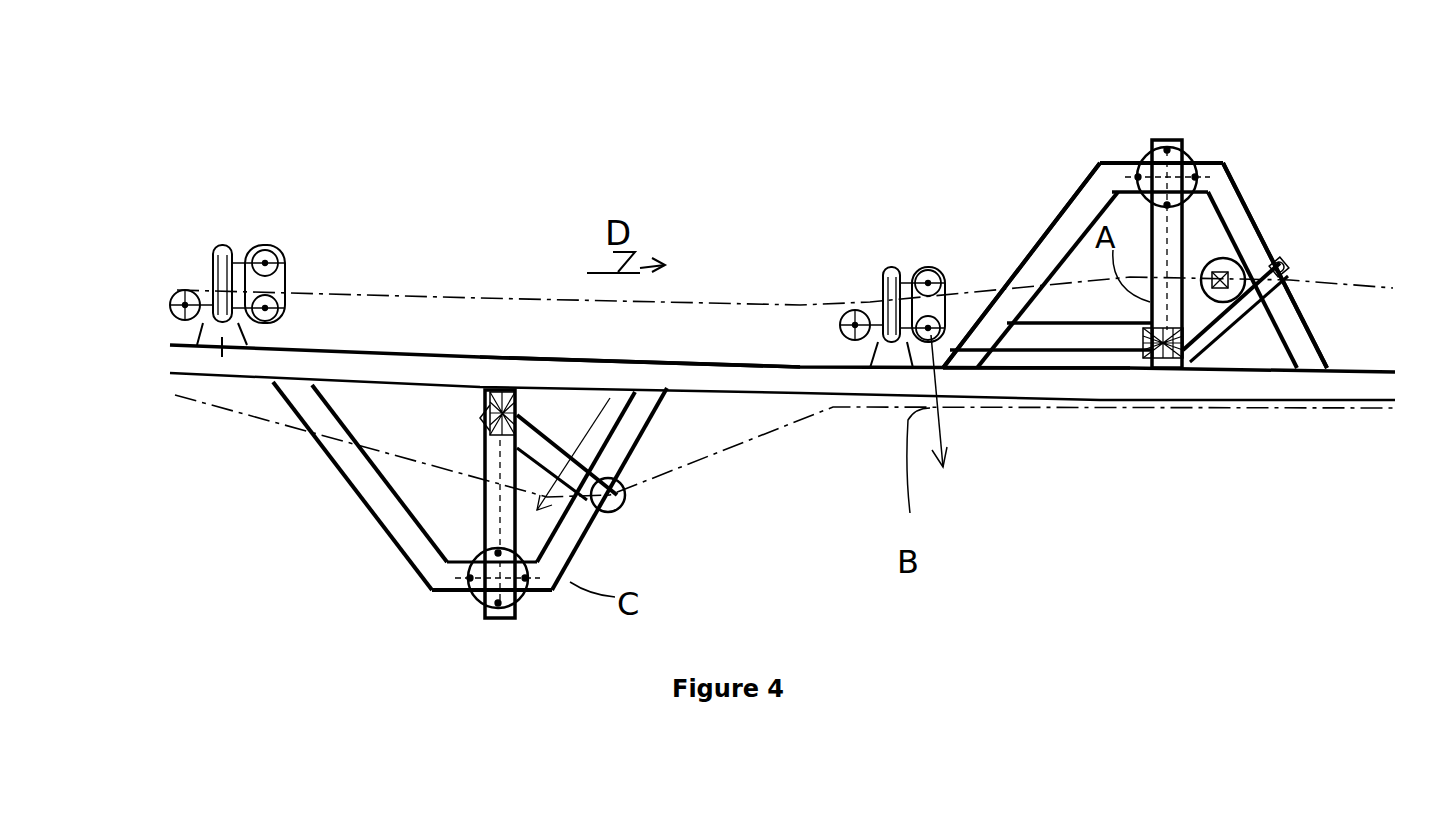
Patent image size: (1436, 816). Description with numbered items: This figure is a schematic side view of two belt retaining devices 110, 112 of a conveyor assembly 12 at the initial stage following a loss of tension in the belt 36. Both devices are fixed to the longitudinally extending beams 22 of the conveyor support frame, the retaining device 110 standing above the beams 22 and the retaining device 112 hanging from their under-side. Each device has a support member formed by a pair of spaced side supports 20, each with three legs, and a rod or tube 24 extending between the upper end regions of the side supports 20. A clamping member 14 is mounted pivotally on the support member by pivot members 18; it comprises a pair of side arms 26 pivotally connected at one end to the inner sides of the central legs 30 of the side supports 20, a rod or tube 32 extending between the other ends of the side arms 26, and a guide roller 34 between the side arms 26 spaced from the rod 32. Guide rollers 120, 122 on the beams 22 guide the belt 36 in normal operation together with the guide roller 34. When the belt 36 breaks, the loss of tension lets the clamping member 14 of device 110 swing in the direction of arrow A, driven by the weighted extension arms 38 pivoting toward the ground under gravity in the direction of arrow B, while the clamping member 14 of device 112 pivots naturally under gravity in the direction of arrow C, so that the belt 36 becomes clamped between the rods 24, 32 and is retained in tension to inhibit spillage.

The conveyor assembly 12 is at (872, 422).
The clamping member 14 is at (560, 428).
The pivot members 18 is at (505, 390).
The side supports 20 is at (348, 515).
The beams 22 is at (747, 378).
The rod or tube 24 is at (477, 600).
The side arms 26 is at (560, 472).
The central legs 30 is at (488, 456).
The rod or tube 32 is at (625, 500).
The guide roller 34 is at (1250, 240).
The belt 36 is at (785, 266).
The extension arms 38 is at (1037, 363).
The retaining device 110 is at (1097, 148).
The retaining device 112 is at (786, 399).
The guide roller 120 is at (853, 310).
The guide roller 122 is at (280, 262).